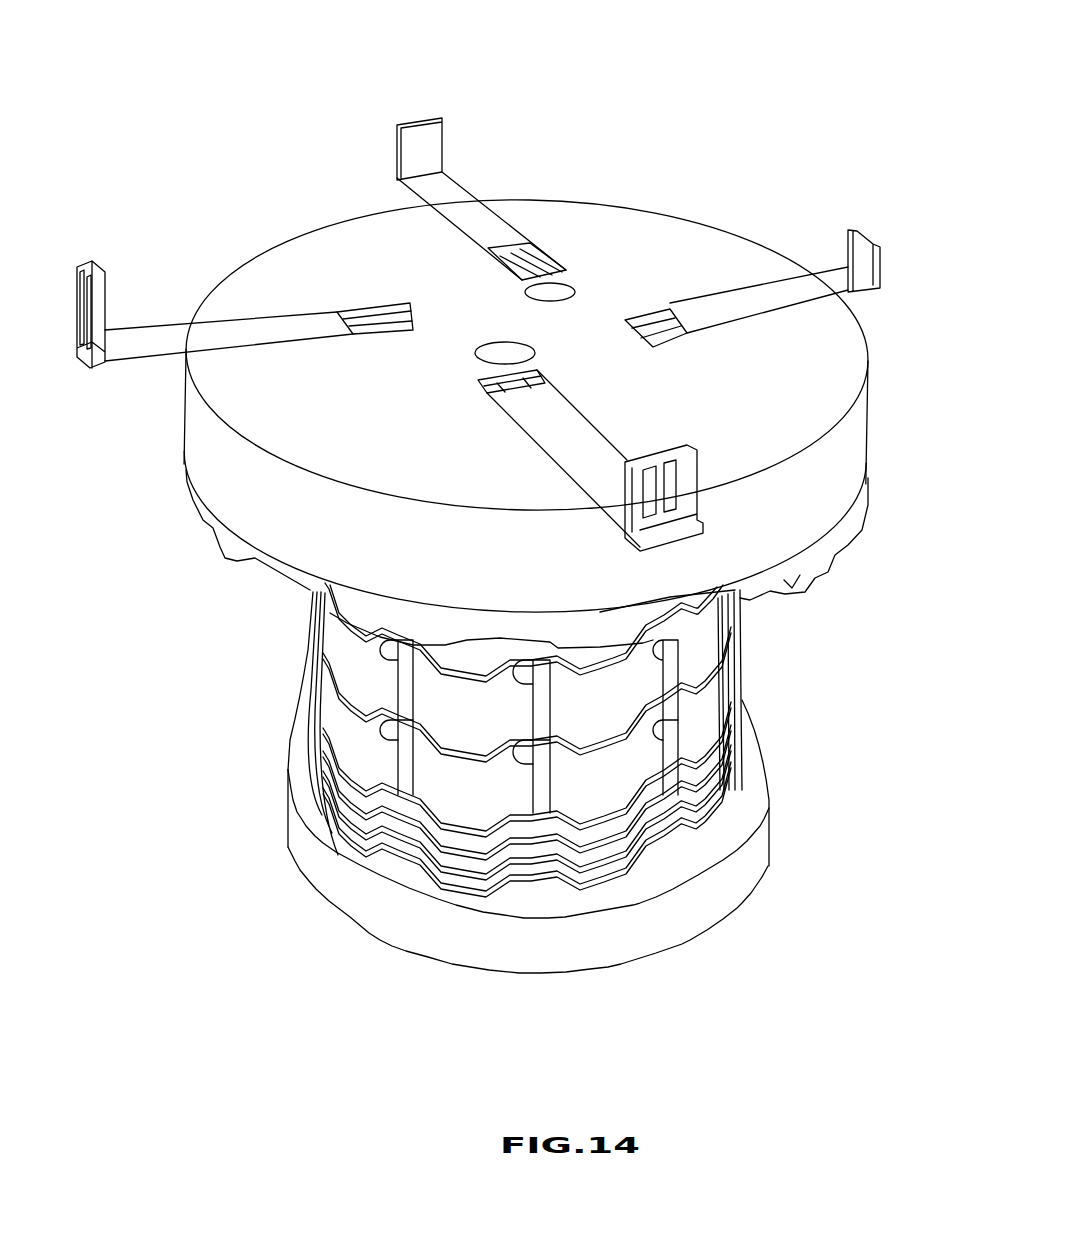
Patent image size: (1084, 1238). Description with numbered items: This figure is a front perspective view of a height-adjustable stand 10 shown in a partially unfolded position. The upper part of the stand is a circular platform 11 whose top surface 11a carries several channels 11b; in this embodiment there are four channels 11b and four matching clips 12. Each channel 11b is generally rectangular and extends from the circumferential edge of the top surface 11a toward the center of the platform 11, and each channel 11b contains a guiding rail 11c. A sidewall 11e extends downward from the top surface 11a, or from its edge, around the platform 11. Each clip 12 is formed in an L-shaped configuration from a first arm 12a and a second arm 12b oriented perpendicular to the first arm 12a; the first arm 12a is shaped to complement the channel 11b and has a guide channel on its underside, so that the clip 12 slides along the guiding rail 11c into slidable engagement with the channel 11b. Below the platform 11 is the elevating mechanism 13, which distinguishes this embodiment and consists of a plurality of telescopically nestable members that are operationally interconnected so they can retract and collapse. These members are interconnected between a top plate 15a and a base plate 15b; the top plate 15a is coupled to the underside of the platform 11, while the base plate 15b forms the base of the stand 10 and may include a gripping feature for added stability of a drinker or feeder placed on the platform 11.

The height-adjustable stand 10 is at (815, 70).
The platform 11 is at (668, 212).
The top surface 11a is at (570, 218).
The channels 11b is at (513, 267).
The guiding rail 11c is at (531, 266).
The sidewall 11e is at (845, 488).
The clips 12 is at (880, 283).
The first arm 12a is at (458, 203).
The second arm 12b is at (436, 155).
The elevating mechanism 13 is at (739, 684).
The top plate 15a is at (820, 563).
The base plate 15b is at (688, 935).